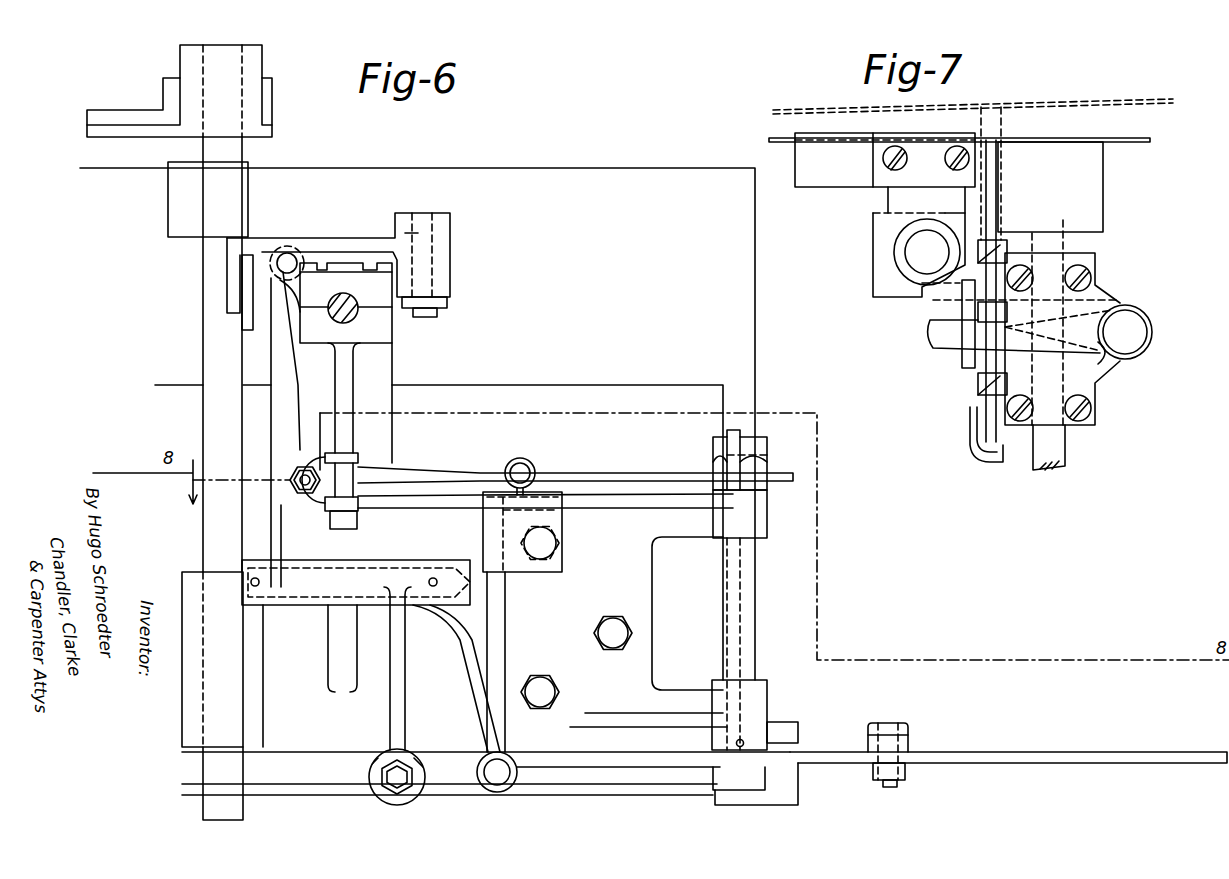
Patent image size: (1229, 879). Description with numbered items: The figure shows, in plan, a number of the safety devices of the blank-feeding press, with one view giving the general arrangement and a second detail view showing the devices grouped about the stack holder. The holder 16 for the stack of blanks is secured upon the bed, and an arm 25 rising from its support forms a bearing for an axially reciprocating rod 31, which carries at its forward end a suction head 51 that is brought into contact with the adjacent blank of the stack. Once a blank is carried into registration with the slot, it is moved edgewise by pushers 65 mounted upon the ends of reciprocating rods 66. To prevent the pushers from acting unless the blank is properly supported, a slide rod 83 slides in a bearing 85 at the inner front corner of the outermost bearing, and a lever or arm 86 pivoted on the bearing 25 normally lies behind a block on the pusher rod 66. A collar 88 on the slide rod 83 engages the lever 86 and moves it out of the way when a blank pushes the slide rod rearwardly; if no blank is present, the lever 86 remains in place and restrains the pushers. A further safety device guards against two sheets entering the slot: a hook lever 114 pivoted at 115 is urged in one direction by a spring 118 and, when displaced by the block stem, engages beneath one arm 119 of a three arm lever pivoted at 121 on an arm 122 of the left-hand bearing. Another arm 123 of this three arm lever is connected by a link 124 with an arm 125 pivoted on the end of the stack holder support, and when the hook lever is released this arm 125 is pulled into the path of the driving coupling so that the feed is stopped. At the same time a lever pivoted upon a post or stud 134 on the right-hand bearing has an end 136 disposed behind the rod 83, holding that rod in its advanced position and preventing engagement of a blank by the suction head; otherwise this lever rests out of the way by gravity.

In FIG. 7, the holder 16 is at (1133, 138).
In FIG. 6, the arm 25 is at (382, 327).
In FIG. 7, the arm 25 is at (1095, 399).
In FIG. 6, the rod 31 is at (350, 320).
In FIG. 7, the rod 31 is at (1057, 449).
In FIG. 7, the suction head 51 is at (1095, 196).
In FIG. 6, the pusher 65 is at (253, 67).
In FIG. 7, the pusher 65 is at (898, 194).
In FIG. 6, the rod 66 is at (232, 150).
In FIG. 7, the rod 66 is at (913, 250).
In FIG. 7, the slide rod 83 is at (993, 157).
In FIG. 7, the bearing 85 is at (1007, 242).
In FIG. 6, the lever 86 is at (318, 238).
In FIG. 7, the lever 86 is at (1100, 354).
In FIG. 7, the collar 88 is at (983, 309).
In FIG. 6, the hook lever 114 is at (620, 477).
In FIG. 6, the pivot 115 is at (357, 460).
In FIG. 6, the spring 118 is at (518, 460).
In FIG. 6, the arm of three arm lever 119 is at (757, 448).
In FIG. 6, the pivot 121 is at (748, 572).
In FIG. 6, the arm 122 is at (763, 504).
In FIG. 6, the arm of three arm lever 123 is at (817, 752).
In FIG. 6, the link 124 is at (902, 738).
In FIG. 6, the arm 125 is at (993, 756).
In FIG. 6, the post or stud 134 is at (240, 582).
In FIG. 6, the end of lever 136 is at (271, 328).
In FIG. 7, the end of lever 136 is at (983, 453).